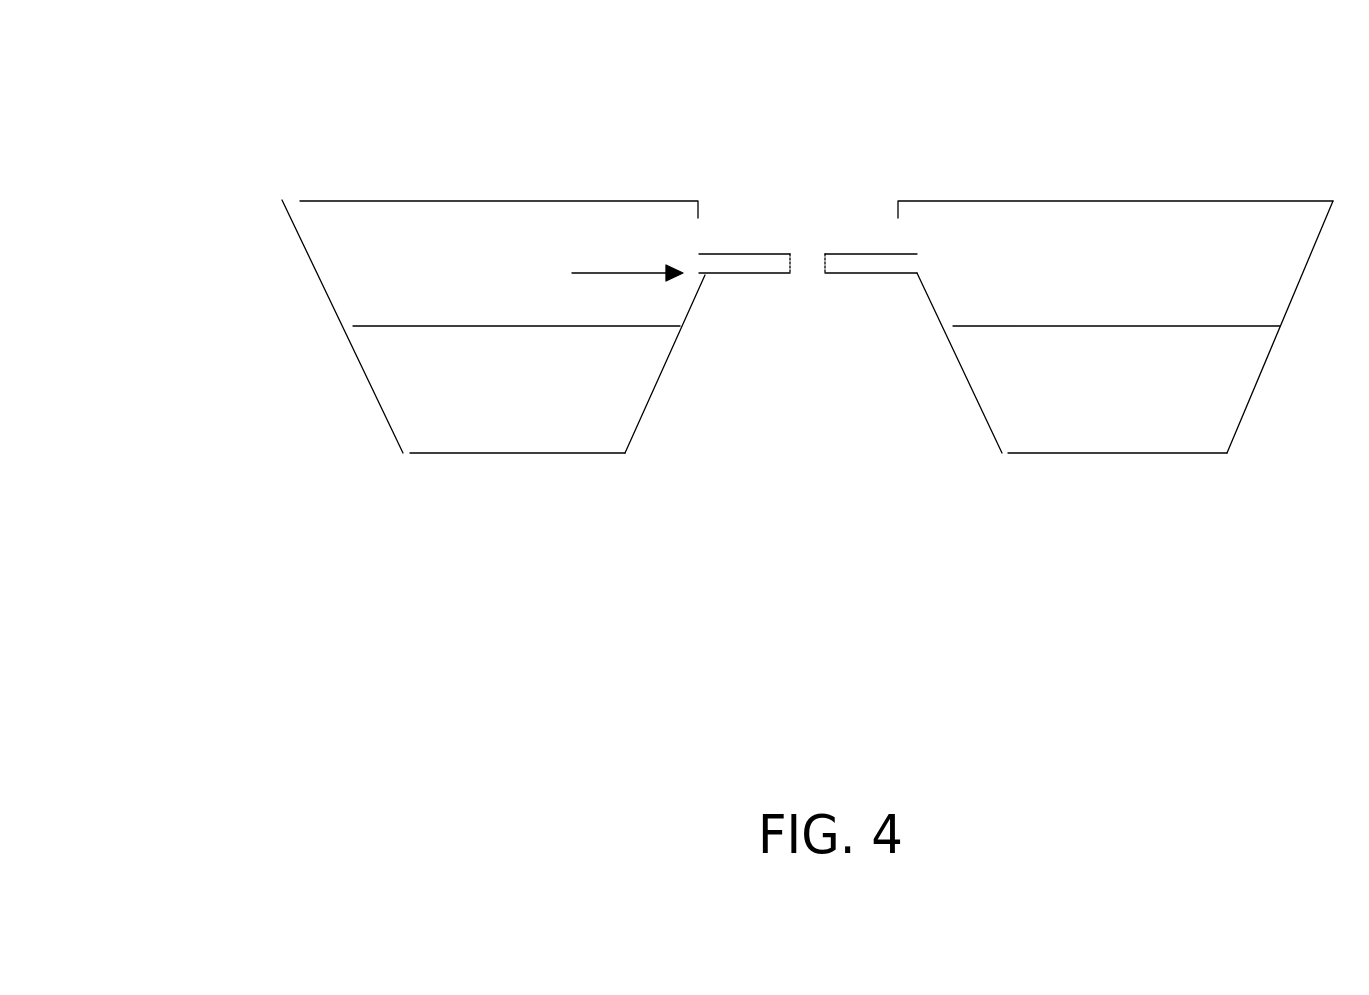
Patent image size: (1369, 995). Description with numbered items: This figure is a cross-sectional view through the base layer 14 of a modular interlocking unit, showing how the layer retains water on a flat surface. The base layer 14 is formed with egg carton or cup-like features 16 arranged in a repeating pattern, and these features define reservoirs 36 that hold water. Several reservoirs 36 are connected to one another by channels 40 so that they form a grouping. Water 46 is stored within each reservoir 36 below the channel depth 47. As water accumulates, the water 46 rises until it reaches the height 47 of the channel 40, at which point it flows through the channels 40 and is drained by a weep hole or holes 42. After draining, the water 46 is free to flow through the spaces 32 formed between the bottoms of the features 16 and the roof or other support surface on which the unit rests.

The base layer 14 is at (705, 351).
The cup-like features 16 is at (818, 567).
The spaces 32 is at (816, 478).
The reservoirs 36 is at (816, 135).
The channels 40 is at (858, 181).
The weep holes 42 is at (830, 146).
The water 46 is at (825, 368).
The channel depth 47 is at (721, 355).